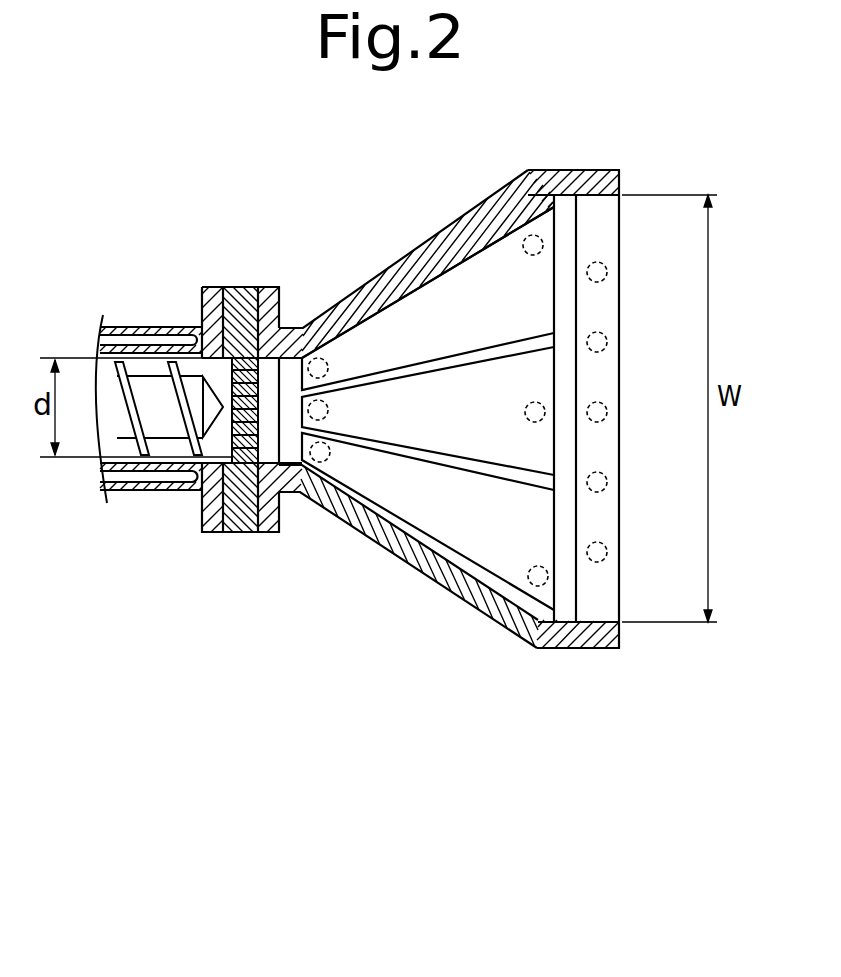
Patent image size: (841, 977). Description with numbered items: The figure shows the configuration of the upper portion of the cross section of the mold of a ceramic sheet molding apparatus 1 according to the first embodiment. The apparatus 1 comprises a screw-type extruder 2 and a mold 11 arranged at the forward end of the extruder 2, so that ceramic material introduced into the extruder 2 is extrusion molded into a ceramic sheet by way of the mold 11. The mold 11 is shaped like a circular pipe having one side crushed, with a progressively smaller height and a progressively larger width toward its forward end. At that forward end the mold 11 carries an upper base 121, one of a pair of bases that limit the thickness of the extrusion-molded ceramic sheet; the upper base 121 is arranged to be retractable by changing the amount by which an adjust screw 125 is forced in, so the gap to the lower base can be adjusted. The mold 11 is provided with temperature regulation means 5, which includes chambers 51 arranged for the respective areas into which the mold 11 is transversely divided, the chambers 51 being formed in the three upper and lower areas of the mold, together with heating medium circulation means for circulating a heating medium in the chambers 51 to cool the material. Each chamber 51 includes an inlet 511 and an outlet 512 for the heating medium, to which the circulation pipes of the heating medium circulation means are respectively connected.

The ceramic sheet molding apparatus 1 is at (503, 150).
The screw-type extruder 2 is at (139, 318).
The mold 11 is at (397, 256).
The chambers 51 is at (453, 300).
The inlet 511 is at (543, 248).
The outlet 512 is at (322, 362).
The temperature regulation means 5 is at (503, 302).
The adjust screw 125 is at (607, 275).
The upper base 121 is at (603, 608).